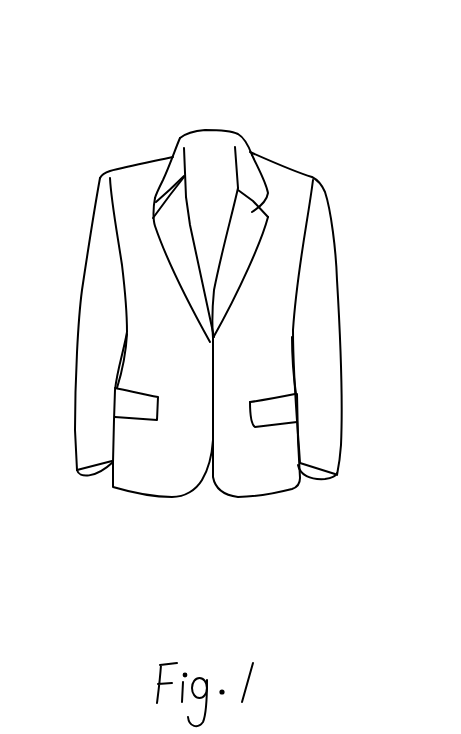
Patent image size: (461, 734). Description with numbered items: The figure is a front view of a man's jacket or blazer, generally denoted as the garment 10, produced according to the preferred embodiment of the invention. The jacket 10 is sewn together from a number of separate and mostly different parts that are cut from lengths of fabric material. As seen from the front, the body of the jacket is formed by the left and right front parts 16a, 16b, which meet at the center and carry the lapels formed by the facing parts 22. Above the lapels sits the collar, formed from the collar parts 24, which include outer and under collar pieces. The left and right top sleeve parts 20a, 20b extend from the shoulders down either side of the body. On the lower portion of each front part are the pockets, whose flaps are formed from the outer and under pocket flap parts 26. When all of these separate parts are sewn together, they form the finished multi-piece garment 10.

The jacket 10 is at (299, 88).
The left front part 16a is at (287, 243).
The right front part 16b is at (172, 470).
The left top sleeve part 20a is at (323, 313).
The right top sleeve part 20b is at (92, 305).
The facing part 22 is at (173, 224).
The collar part 24 is at (169, 178).
The pocket flap part 26 is at (135, 412).